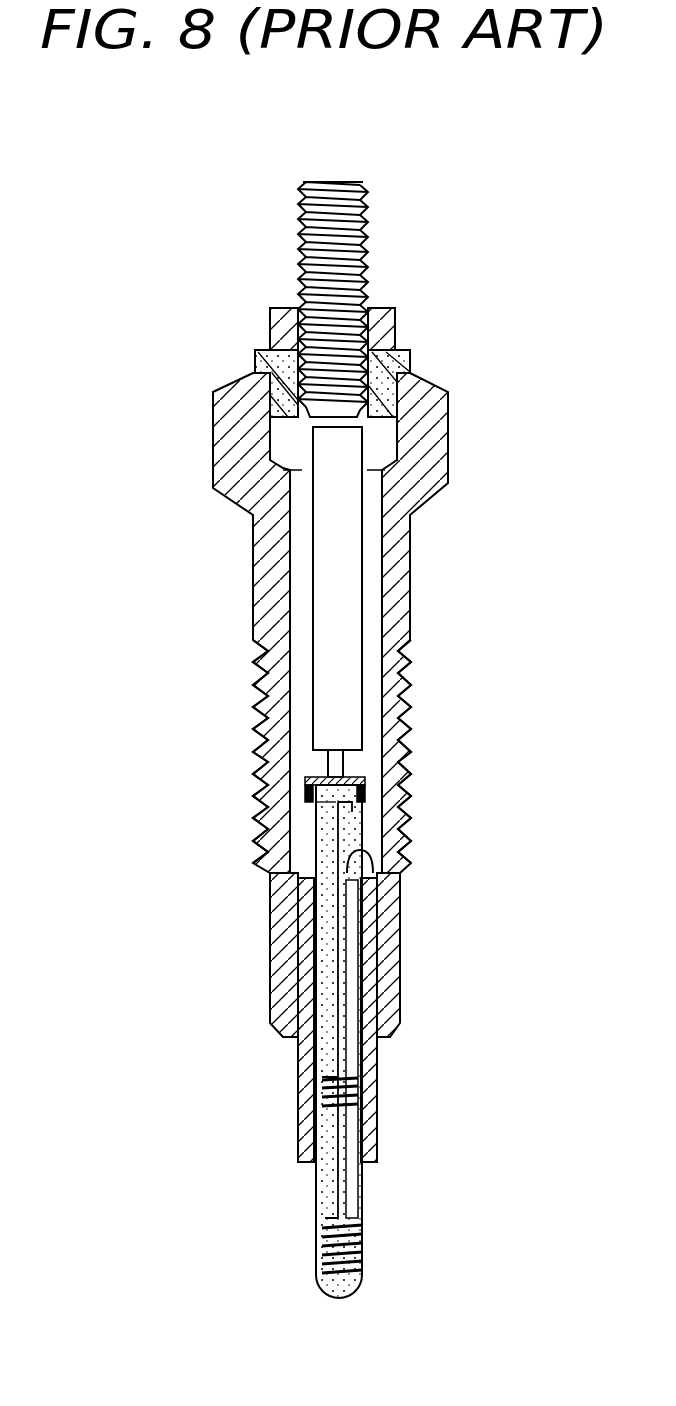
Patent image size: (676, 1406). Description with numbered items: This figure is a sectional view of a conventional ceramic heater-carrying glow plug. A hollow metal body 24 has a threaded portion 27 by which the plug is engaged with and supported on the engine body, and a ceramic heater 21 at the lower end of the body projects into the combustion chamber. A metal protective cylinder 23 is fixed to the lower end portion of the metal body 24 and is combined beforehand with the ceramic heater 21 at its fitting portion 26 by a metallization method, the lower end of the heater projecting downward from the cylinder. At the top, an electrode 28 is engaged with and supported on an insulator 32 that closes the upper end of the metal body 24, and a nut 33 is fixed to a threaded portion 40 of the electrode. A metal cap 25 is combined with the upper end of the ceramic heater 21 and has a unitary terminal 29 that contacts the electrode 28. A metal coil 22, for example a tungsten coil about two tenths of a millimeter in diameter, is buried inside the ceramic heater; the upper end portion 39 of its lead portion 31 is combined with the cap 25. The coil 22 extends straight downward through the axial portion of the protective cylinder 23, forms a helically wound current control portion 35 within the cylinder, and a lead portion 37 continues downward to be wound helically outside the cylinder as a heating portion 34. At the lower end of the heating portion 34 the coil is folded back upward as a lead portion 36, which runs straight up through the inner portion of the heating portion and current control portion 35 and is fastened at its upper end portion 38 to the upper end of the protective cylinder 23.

The ceramic heater 21 is at (368, 1197).
The metal coil 22 is at (334, 940).
The metal protective cylinder 23 is at (372, 1077).
The hollow metal body 24 is at (270, 562).
The metal cap 25 is at (315, 780).
The fitting portion 26 is at (313, 988).
The threaded portion 27 is at (262, 662).
The electrode 28 is at (338, 545).
The terminal 29 is at (337, 763).
The lead portion 31 is at (337, 830).
The insulator 32 is at (410, 360).
The nut 33 is at (395, 317).
The heating portion 34 is at (347, 1237).
The current control portion 35 is at (310, 1097).
The lead portion 36 is at (367, 988).
The lead portion 37 is at (328, 1198).
The upper end portion 38 is at (367, 853).
The upper end portion 39 is at (352, 806).
The threaded portion 40 is at (355, 232).